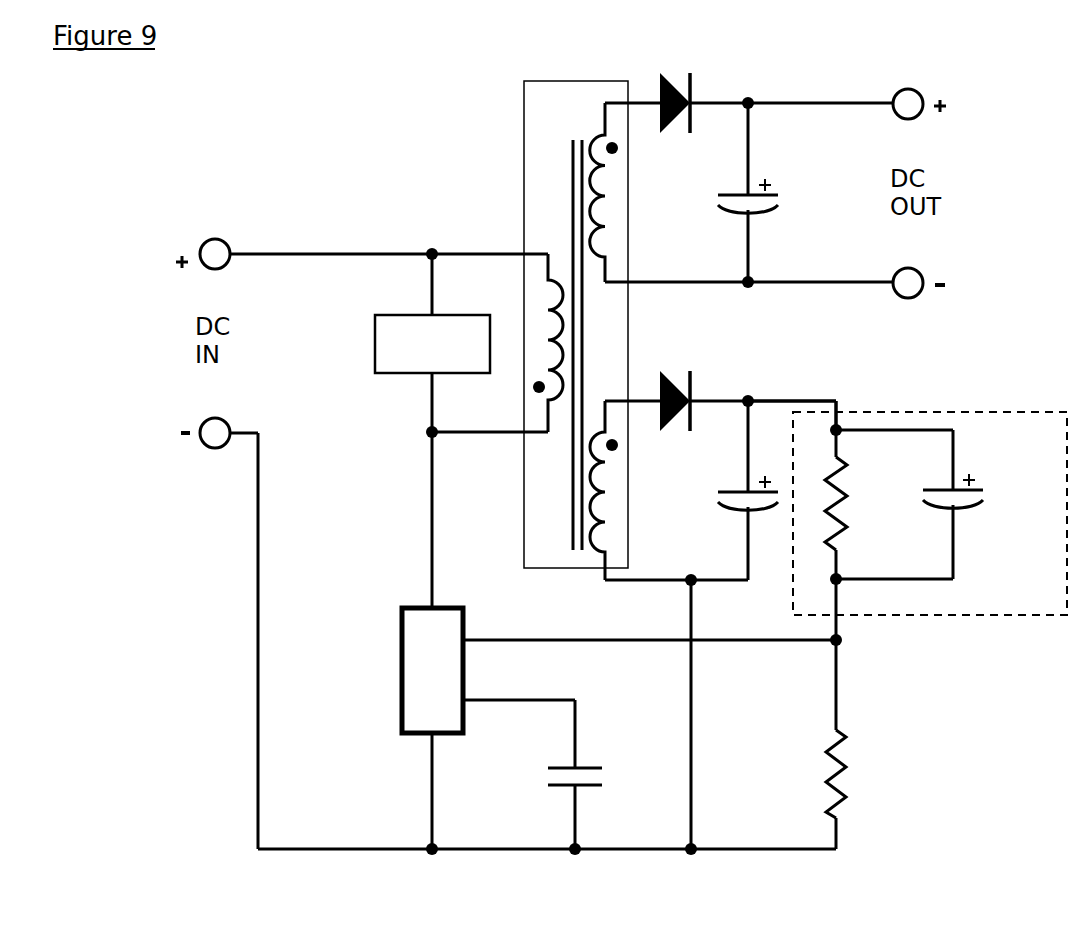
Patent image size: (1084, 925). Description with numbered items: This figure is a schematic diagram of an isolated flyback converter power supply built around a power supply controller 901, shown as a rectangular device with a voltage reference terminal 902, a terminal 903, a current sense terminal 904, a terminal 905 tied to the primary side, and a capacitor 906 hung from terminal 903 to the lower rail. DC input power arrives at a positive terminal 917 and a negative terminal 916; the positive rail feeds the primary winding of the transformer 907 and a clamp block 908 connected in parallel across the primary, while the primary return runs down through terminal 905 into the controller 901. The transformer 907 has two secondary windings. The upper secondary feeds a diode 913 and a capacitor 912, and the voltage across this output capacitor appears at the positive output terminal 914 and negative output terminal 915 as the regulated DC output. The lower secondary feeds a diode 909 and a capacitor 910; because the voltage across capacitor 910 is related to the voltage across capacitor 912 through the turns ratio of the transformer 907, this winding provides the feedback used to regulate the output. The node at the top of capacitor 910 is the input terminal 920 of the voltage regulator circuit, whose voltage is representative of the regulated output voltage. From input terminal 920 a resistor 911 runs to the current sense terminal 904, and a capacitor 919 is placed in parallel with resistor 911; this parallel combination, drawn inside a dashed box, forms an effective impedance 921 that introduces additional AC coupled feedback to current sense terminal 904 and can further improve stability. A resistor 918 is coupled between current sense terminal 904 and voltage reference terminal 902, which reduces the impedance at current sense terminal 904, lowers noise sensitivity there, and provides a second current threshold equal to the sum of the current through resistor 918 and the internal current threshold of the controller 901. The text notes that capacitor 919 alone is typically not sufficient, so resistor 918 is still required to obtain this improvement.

The power supply controller 901 is at (400, 663).
The voltage reference terminal 902 is at (432, 743).
The capacitor pin 903 is at (468, 702).
The current sense terminal 904 is at (470, 637).
The drain / input pin 905 is at (430, 593).
The capacitor 906 is at (590, 753).
The transformer 907 is at (518, 155).
The clamp circuit 908 is at (377, 373).
The diode 909 is at (678, 370).
The capacitor 910 is at (712, 502).
The resistor 911 is at (843, 487).
The capacitor 912 is at (780, 207).
The output diode 913 is at (677, 138).
The DC output positive terminal 914 is at (912, 82).
The DC output negative terminal 915 is at (912, 300).
The DC input negative terminal 916 is at (210, 452).
The DC input positive terminal 917 is at (213, 230).
The resistor 918 is at (848, 790).
The capacitor 919 is at (967, 518).
The input terminal 920 is at (765, 394).
The effective impedance 921 is at (1013, 615).